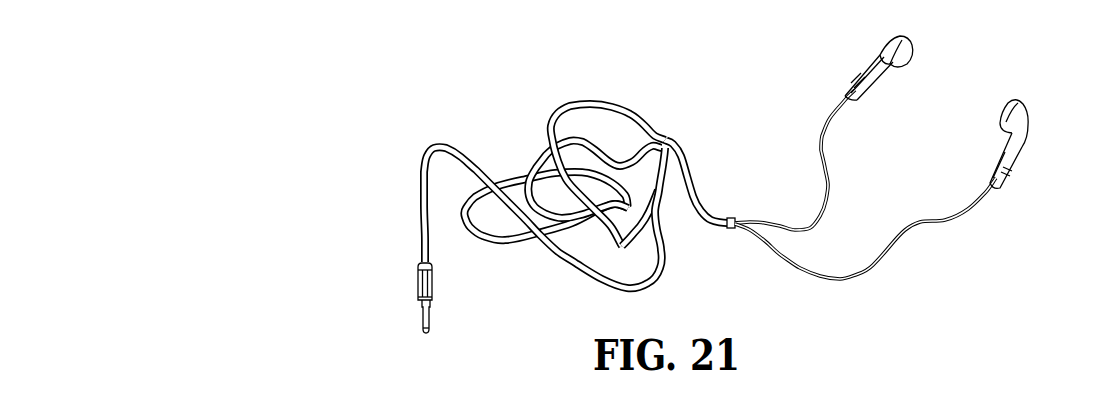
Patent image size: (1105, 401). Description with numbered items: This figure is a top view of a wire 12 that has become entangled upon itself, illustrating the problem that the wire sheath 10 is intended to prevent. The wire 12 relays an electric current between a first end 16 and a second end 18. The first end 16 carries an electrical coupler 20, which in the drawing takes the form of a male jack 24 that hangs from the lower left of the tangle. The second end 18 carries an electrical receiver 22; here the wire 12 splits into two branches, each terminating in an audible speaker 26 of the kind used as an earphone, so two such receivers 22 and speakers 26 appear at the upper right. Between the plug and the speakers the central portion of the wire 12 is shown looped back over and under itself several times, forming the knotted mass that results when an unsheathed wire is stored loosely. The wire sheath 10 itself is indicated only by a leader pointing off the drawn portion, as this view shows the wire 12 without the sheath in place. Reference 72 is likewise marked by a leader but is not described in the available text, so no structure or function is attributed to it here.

The wire sheath 10 is at (590, 398).
The wire 12 is at (593, 99).
The first end 16 is at (418, 290).
The second end 18 is at (896, 36).
The electrical coupler 20 is at (432, 287).
The electrical receiver 22 is at (907, 57).
The male jack 24 is at (422, 317).
The audible speaker 26 is at (869, 57).
The device 72 is at (946, 398).